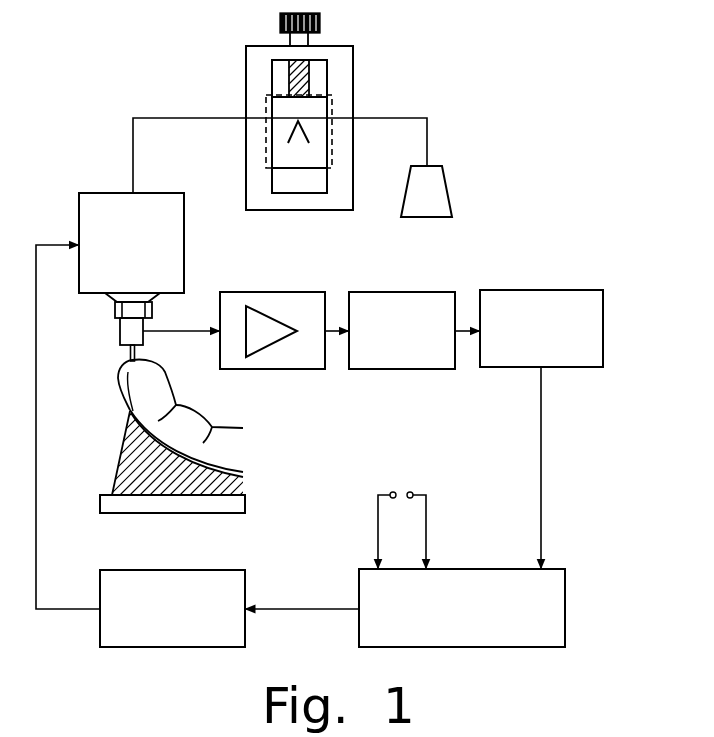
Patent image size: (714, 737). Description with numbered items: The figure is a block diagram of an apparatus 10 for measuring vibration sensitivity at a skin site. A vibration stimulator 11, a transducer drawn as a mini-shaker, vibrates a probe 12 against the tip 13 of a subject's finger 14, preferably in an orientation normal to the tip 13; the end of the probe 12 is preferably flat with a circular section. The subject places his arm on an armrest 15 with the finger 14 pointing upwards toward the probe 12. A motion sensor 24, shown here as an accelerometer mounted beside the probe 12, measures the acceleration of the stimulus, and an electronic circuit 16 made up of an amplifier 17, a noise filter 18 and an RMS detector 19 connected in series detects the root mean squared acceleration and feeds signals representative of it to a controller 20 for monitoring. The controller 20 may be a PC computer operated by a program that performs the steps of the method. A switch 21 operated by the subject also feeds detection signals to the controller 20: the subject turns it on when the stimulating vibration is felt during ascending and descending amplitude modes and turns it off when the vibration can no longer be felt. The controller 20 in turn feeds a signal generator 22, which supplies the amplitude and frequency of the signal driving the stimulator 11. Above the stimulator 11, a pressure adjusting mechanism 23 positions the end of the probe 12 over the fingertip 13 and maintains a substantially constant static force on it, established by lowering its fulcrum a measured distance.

The apparatus 10 is at (447, 192).
The vibration stimulator 11 is at (184, 253).
The probe 12 is at (126, 353).
The tip 13 is at (143, 363).
The finger 14 is at (242, 428).
The armrest 15 is at (118, 457).
The electronic circuit 16 is at (520, 251).
The amplifier 17 is at (265, 291).
The noise filter 18 is at (390, 291).
The RMS detector 19 is at (603, 323).
The controller 20 is at (455, 568).
The switch 21 is at (385, 493).
The signal generator 22 is at (195, 570).
The pressure adjusting mechanism 23 is at (246, 80).
The motion sensor 24 is at (118, 334).